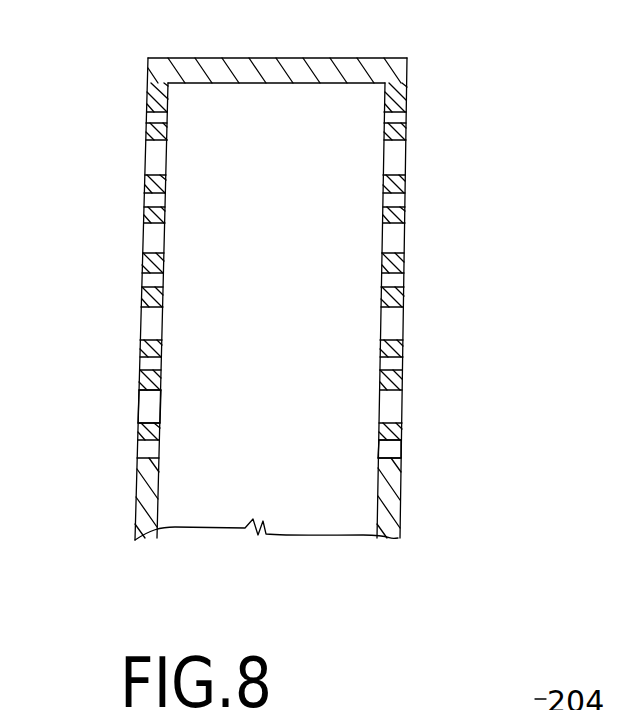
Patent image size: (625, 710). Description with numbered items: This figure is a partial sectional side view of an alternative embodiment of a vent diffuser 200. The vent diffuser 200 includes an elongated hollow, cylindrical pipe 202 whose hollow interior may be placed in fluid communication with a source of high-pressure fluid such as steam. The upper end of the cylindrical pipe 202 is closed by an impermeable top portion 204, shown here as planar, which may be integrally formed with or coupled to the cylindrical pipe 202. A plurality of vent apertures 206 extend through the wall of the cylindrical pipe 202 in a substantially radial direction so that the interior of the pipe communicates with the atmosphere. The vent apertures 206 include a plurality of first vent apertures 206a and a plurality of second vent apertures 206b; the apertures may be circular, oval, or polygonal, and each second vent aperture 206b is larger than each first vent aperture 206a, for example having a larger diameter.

The vent diffuser 200 is at (283, 318).
The cylindrical pipe 202 is at (400, 497).
The top portion 204 is at (315, 72).
The vent apertures 206 is at (135, 97).
The first vent apertures 206a is at (383, 448).
The second vent apertures 206b is at (150, 404).